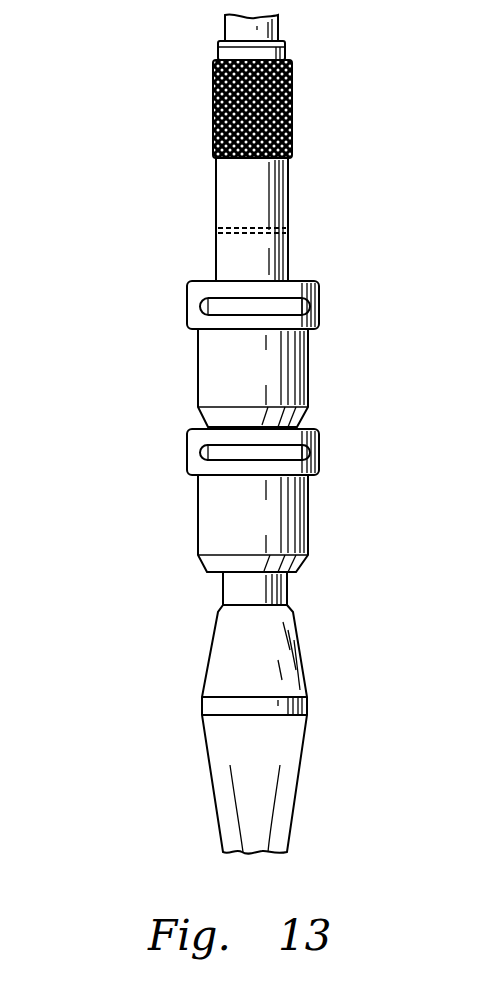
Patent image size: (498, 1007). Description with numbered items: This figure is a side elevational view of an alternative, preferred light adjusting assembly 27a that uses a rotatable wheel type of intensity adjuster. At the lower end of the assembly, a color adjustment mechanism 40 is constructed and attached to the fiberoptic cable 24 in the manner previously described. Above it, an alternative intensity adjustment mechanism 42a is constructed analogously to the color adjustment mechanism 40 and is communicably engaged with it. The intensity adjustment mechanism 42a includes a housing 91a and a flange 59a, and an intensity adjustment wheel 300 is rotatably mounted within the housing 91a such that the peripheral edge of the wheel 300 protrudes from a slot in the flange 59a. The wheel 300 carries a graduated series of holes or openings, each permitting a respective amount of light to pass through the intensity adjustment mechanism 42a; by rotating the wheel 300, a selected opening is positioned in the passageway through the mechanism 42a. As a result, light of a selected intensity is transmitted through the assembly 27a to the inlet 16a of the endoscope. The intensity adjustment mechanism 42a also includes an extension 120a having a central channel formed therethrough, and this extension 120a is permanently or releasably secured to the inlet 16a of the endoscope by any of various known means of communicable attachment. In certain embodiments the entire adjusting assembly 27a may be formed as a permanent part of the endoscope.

The inlet 16a is at (288, 212).
The extension 120a is at (216, 242).
The light adjusting assembly 27a is at (228, 346).
The flange 59a is at (318, 283).
The intensity adjustment wheel 300 is at (296, 305).
The intensity adjustment mechanism 42a is at (198, 362).
The housing 91a is at (308, 372).
The color adjustment mechanism 40 is at (308, 522).
The fiberoptic cable 24 is at (298, 770).